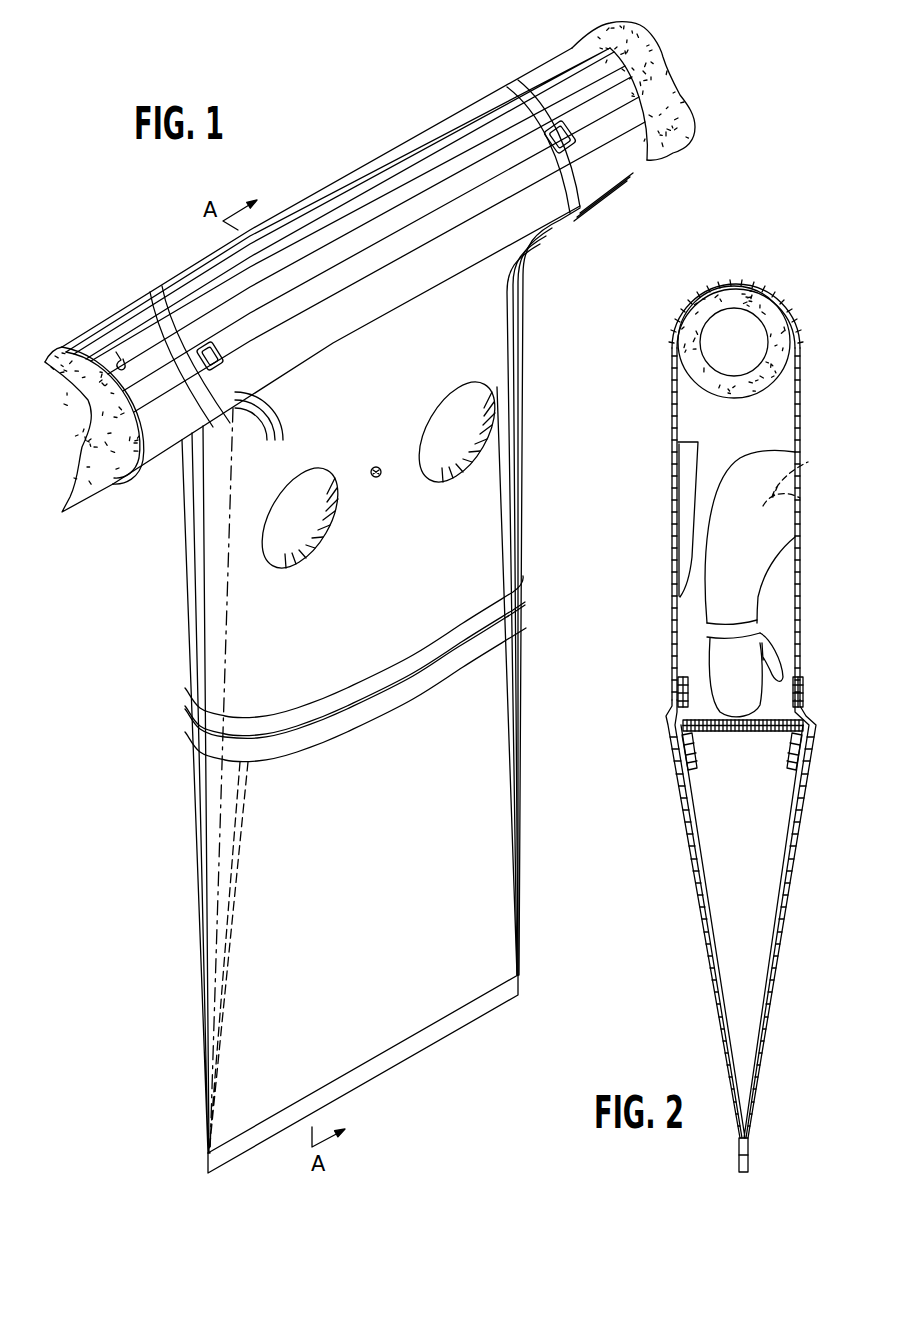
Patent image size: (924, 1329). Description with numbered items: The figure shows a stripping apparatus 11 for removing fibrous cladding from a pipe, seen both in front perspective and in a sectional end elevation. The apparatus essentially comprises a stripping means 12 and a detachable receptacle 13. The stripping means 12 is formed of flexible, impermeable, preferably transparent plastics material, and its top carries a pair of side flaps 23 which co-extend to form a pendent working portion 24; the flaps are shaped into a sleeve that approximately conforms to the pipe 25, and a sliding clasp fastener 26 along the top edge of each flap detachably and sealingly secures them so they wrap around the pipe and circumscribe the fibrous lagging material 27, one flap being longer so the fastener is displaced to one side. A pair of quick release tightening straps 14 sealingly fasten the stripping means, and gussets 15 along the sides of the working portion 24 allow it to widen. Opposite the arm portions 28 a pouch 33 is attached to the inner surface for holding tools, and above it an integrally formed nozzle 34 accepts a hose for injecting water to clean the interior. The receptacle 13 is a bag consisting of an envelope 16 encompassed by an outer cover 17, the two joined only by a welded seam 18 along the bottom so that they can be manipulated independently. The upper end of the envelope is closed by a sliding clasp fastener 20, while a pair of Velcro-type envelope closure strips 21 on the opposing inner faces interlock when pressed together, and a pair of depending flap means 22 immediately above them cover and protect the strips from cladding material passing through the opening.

In FIG. 1, the stripping apparatus 11 is at (652, 204).
In FIG. 1, the stripping means 12 is at (316, 595).
In FIG. 1, the detachable receptacle 13 is at (311, 950).
In FIG. 1, the quick release tightening straps 14 is at (516, 95).
In FIG. 1, the gussets 15 is at (207, 508).
In FIG. 2, the envelope 16 is at (703, 863).
In FIG. 1, the outer cover 17 is at (395, 857).
In FIG. 2, the outer cover 17 is at (698, 908).
In FIG. 1, the welded seam 18 is at (433, 1035).
In FIG. 2, the welded seam 18 is at (750, 1157).
In FIG. 2, the sliding clasp fastener 20 is at (728, 732).
In FIG. 2, the envelope closure strips 21 is at (690, 768).
In FIG. 2, the depending flap means 22 is at (693, 755).
In FIG. 1, the side flaps 23 is at (332, 280).
In FIG. 1, the pendent working portion 24 is at (414, 568).
In FIG. 1, the pipe 25 is at (675, 70).
In FIG. 2, the pipe 25 is at (768, 336).
In FIG. 1, the sliding clasp fastener 26 is at (413, 190).
In FIG. 1, the fibrous lagging material 27 is at (678, 128).
In FIG. 1, the arm portions 28 is at (455, 388).
In FIG. 2, the arm portions 28 is at (750, 557).
In FIG. 2, the pouch 33 is at (690, 467).
In FIG. 1, the nozzle 34 is at (376, 467).
In FIG. 2, the nozzle 34 is at (806, 466).